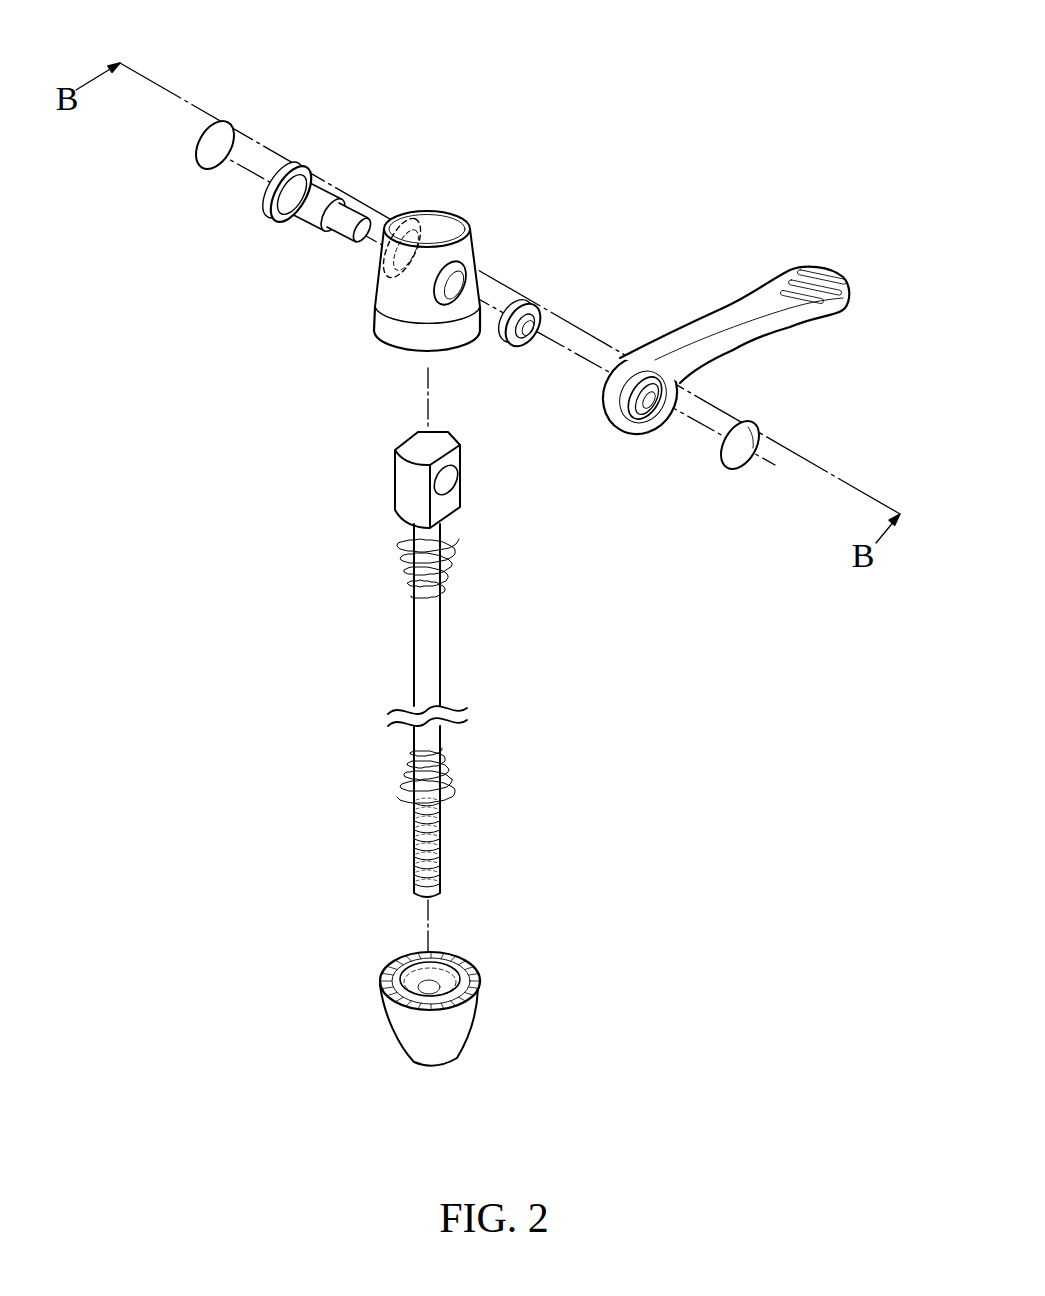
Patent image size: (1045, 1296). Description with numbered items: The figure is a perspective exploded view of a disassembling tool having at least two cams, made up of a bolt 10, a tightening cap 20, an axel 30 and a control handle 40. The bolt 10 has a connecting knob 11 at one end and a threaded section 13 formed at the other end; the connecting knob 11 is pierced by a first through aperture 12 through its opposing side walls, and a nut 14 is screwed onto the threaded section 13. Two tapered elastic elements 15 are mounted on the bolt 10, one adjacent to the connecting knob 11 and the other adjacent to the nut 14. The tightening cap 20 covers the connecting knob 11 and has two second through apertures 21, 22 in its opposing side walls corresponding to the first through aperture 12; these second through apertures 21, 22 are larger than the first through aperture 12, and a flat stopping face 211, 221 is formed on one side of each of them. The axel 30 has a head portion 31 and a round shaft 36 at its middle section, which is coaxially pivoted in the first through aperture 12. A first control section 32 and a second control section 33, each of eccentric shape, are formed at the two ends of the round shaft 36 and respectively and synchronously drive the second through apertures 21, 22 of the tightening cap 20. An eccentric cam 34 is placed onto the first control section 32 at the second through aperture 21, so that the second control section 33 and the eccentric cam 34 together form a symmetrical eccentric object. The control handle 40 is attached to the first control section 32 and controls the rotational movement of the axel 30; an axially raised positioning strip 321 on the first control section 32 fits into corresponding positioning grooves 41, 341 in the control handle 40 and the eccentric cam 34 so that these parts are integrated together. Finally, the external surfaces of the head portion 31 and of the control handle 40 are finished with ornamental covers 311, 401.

The bolt 10 is at (426, 665).
The connecting knob 11 is at (414, 492).
The first through aperture 12 is at (447, 483).
The threaded section 13 is at (436, 847).
The nut 14 is at (450, 1017).
The elastic element 15 is at (403, 578).
The tightening cap 20 is at (426, 261).
The second through aperture 21 is at (448, 280).
The flat stopping face 211 is at (430, 290).
The second through aperture 22 is at (396, 241).
The flat stopping face 221 is at (398, 262).
The axel 30 is at (268, 173).
The head portion 31 is at (213, 238).
The ornamental cover 311 is at (208, 133).
The first control section 32 is at (333, 216).
The positioning strip 321 is at (343, 232).
The second control section 33 is at (283, 208).
The eccentric cam 34 is at (572, 332).
The positioning groove 341 is at (528, 332).
The round shaft 36 is at (317, 178).
The control handle 40 is at (730, 409).
The ornamental cover 401 is at (747, 447).
The positioning groove 41 is at (648, 402).